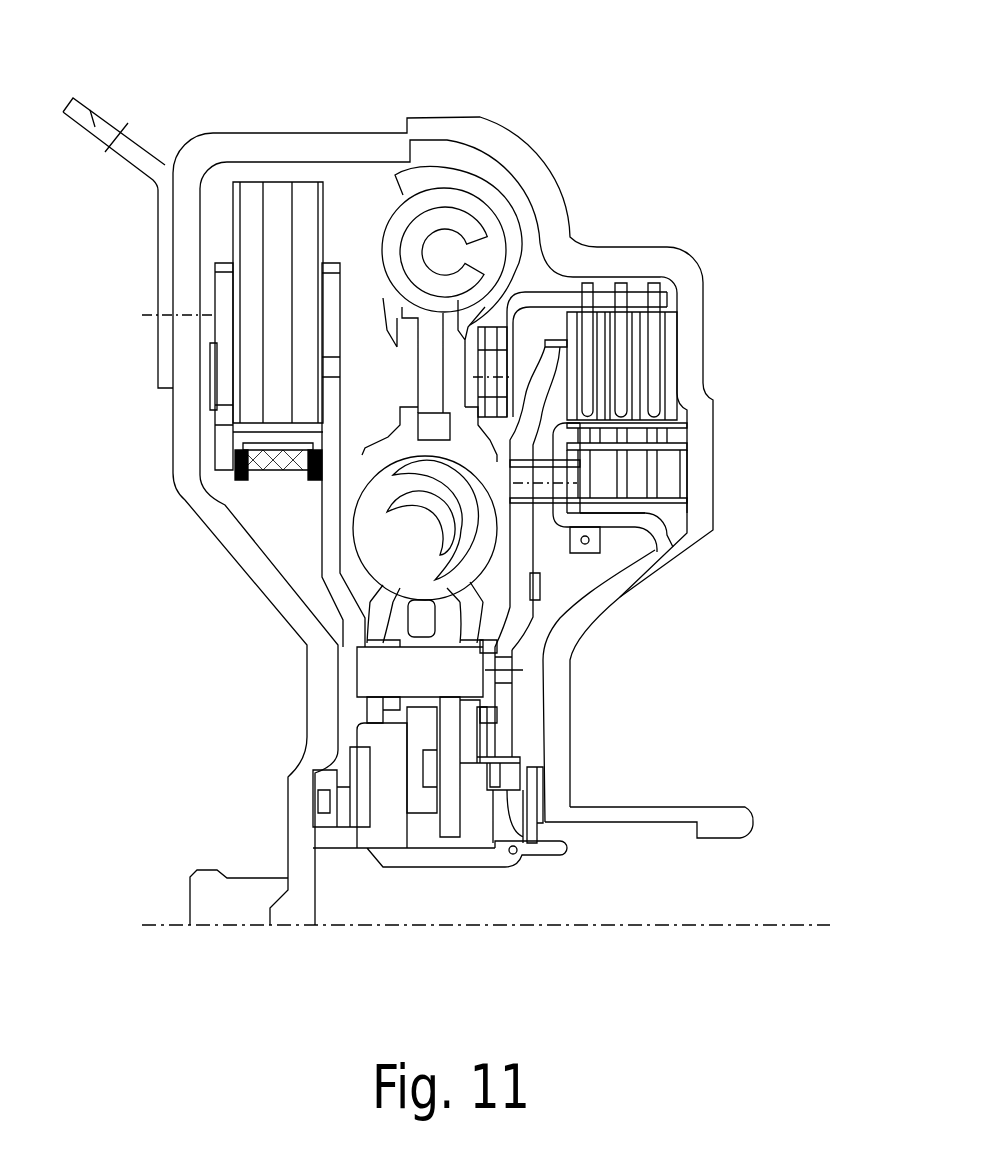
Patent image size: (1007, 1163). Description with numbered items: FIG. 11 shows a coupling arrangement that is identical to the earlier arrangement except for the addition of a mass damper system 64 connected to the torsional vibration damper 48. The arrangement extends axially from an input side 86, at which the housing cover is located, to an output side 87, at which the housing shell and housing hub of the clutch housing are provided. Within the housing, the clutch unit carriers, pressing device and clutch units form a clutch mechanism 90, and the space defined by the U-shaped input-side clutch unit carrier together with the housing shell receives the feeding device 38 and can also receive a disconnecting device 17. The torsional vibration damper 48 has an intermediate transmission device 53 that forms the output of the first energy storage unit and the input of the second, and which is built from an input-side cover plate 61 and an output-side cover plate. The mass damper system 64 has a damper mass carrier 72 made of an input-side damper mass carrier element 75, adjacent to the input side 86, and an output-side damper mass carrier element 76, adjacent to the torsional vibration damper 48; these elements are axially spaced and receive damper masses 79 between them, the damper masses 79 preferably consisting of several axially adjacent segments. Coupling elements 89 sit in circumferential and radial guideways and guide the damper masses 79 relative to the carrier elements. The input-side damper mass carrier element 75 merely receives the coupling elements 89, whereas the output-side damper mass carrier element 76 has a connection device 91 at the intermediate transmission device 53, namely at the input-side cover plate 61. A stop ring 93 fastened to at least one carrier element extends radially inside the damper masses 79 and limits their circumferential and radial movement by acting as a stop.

The disconnecting device 17 is at (673, 515).
The feeding device 38 is at (672, 487).
The torsional vibration damper 48 is at (490, 172).
The intermediate transmission device 53 is at (508, 250).
The input-side cover plate 61 is at (382, 593).
The mass damper system 64 is at (267, 501).
The damper mass carrier 72 is at (333, 367).
The input-side damper mass carrier element 75 is at (228, 283).
The output-side damper mass carrier element 76 is at (334, 303).
The damper masses 79 is at (278, 213).
The input side 86 is at (200, 488).
The output side 87 is at (693, 453).
The coupling elements 89 is at (210, 360).
The clutch mechanism 90 is at (684, 341).
The connection device 91 is at (407, 668).
The stop ring 93 is at (253, 472).